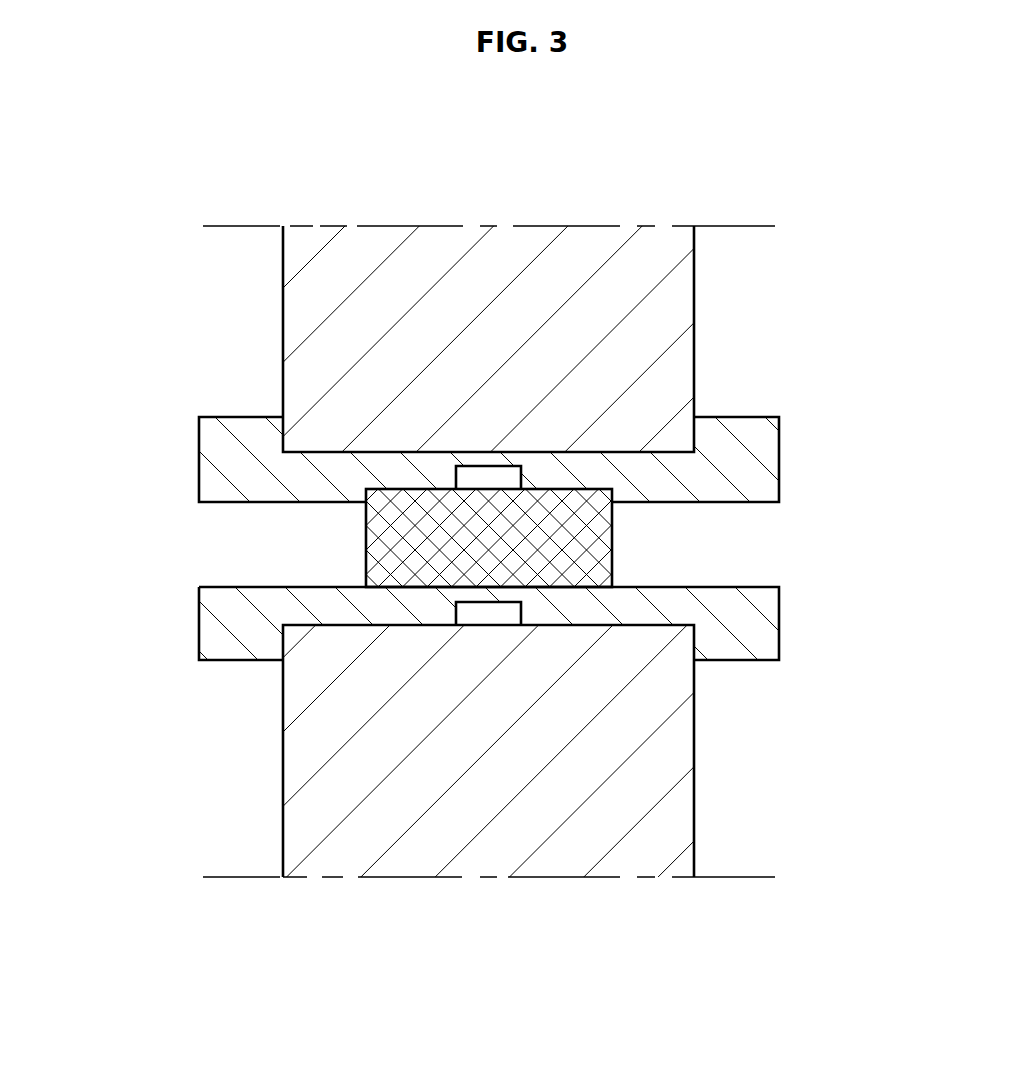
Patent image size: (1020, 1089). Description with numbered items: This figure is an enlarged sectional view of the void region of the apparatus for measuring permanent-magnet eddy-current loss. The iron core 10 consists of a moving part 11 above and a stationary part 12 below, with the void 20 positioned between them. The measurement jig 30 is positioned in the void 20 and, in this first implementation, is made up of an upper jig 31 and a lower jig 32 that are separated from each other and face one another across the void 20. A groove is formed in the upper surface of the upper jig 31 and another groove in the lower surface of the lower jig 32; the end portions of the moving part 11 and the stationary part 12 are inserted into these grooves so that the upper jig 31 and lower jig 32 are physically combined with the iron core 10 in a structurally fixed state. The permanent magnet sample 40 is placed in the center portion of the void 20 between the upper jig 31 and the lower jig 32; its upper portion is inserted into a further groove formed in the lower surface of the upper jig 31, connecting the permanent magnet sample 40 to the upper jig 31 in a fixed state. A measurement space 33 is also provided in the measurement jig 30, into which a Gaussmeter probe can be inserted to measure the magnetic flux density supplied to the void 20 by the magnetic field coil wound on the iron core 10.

The iron core 10 is at (588, 208).
The moving part 11 is at (452, 248).
The stationary part 12 is at (465, 830).
The void 20 is at (233, 553).
The measurement jig 30 is at (473, 546).
The upper jig 31 is at (760, 455).
The lower jig 32 is at (762, 625).
The measurement space 33 is at (475, 478).
The permanent magnet sample 40 is at (602, 541).